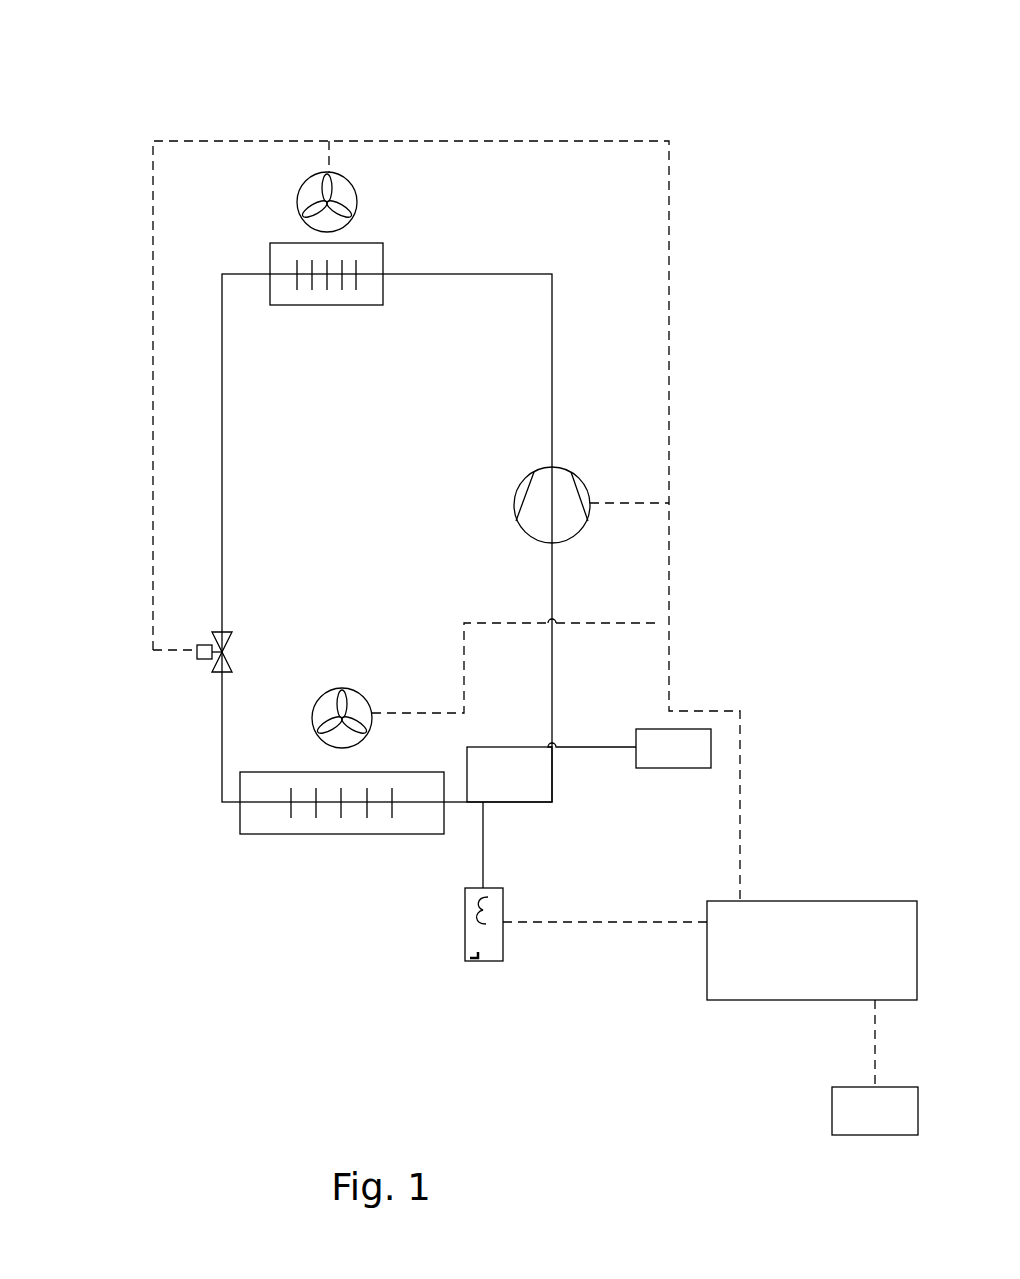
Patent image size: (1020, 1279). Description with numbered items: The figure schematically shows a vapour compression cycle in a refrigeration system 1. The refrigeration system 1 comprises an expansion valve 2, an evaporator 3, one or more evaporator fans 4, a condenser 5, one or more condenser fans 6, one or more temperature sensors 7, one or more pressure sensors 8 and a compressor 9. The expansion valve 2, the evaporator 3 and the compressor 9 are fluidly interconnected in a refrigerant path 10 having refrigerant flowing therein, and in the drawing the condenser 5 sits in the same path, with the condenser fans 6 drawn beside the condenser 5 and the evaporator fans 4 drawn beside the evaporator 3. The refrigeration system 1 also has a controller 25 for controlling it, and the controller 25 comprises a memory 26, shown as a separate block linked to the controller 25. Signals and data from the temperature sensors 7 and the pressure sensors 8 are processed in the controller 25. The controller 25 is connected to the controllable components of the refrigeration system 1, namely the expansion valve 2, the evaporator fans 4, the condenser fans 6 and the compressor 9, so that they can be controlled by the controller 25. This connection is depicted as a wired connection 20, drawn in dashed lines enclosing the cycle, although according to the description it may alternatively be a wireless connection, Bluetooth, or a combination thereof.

The refrigeration system 1 is at (556, 109).
The expansion valve 2 is at (207, 643).
The evaporator 3 is at (270, 772).
The evaporator fan 4 is at (352, 688).
The condenser 5 is at (282, 243).
The condenser fan 6 is at (335, 172).
The temperature sensor 7 is at (468, 930).
The pressure sensor 8 is at (700, 729).
The compressor 9 is at (585, 481).
The refrigerant path 10 is at (497, 274).
The wired connection 20 is at (669, 253).
The controller 25 is at (772, 901).
The memory 26 is at (832, 1110).